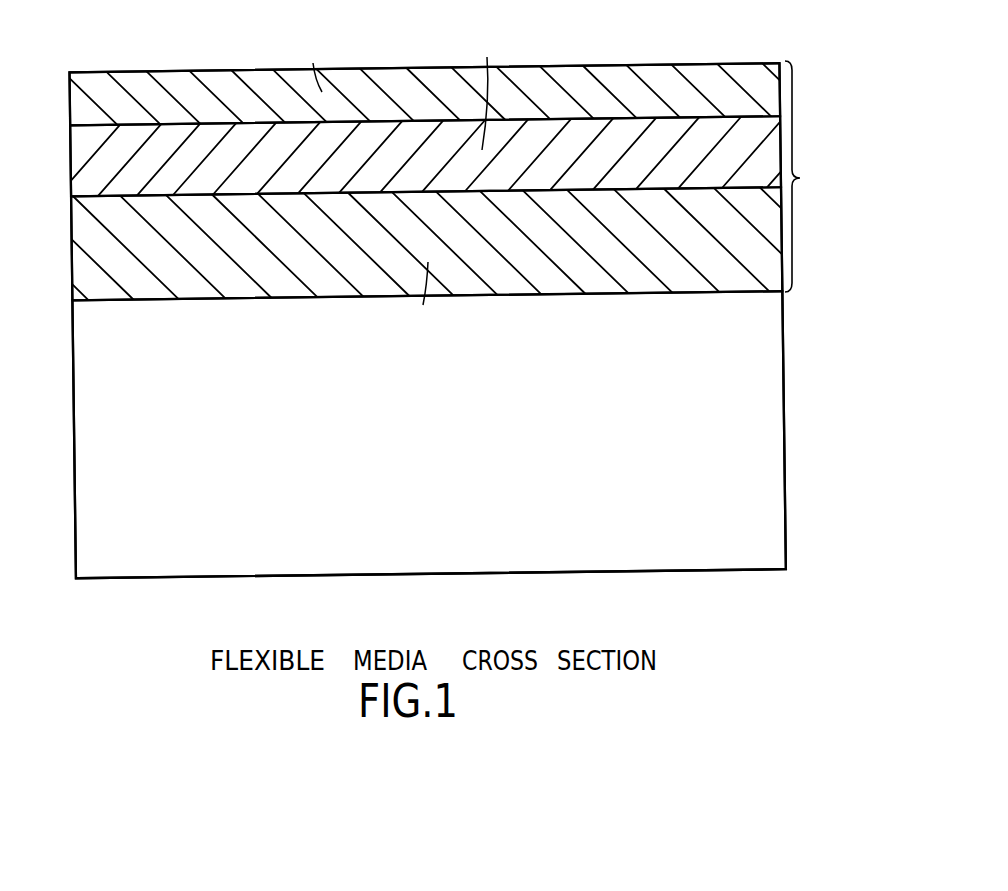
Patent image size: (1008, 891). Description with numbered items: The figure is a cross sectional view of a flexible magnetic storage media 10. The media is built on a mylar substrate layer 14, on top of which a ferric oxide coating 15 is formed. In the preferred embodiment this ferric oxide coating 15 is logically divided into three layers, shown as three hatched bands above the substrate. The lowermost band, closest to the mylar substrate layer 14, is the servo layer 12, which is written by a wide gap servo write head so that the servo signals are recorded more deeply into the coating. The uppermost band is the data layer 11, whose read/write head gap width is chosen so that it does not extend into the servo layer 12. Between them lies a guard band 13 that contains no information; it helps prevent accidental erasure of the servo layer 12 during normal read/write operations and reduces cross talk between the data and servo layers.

The magnetic media 10 is at (69, 346).
The data layer 11 is at (212, 80).
The servo layer 12 is at (75, 251).
The guard band 13 is at (72, 145).
The mylar substrate layer 14 is at (780, 436).
The ferric oxide coating 15 is at (845, 176).